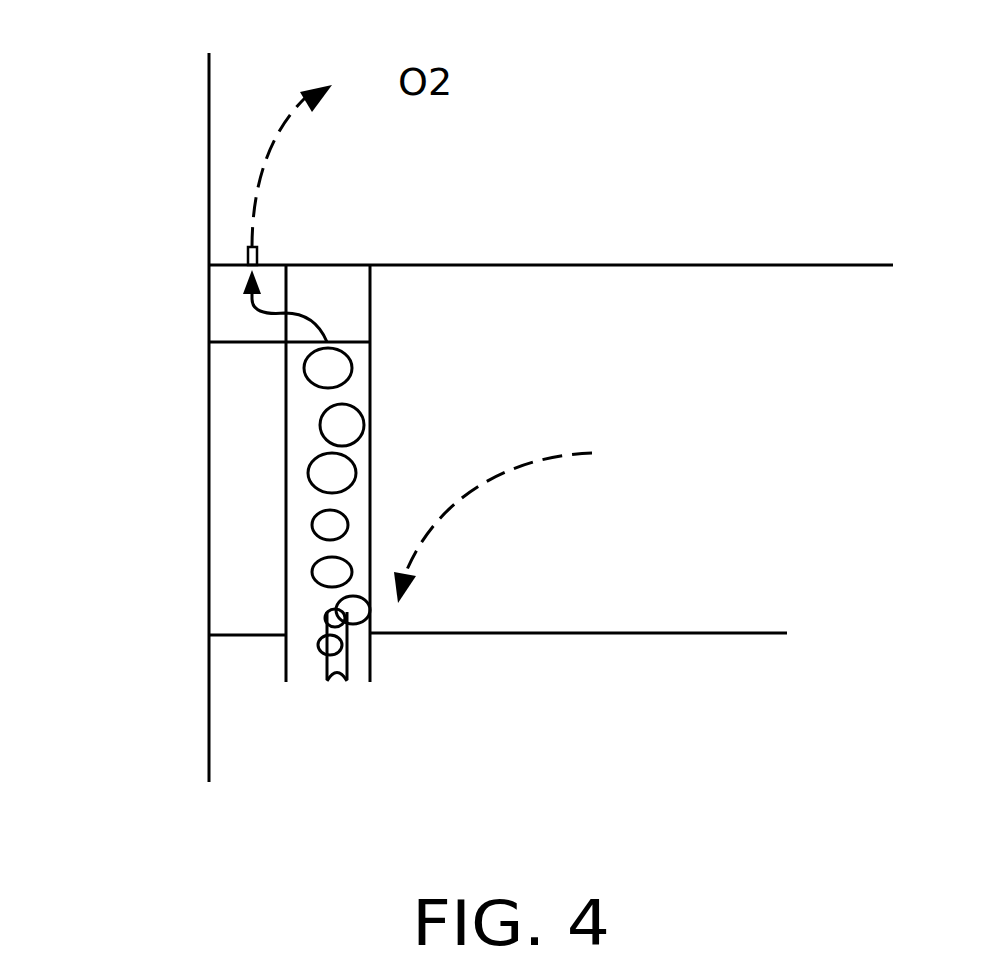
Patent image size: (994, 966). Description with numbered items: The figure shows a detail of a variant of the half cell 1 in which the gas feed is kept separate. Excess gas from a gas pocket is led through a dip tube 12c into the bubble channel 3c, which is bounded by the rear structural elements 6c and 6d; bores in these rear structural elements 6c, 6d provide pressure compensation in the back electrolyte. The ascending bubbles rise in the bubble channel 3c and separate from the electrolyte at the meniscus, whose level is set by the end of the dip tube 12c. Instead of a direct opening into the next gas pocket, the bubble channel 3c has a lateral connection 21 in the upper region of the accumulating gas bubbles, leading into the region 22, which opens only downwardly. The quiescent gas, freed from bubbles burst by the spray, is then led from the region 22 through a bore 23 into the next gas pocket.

The half cell 1 is at (209, 762).
The rear structural element 6d is at (697, 265).
The rear structural element 6c is at (578, 633).
The bubble channel 3c is at (307, 558).
The region 22 is at (238, 305).
The lateral connection 21 is at (288, 323).
The bore 23 is at (247, 247).
The dip tube 12c is at (335, 663).